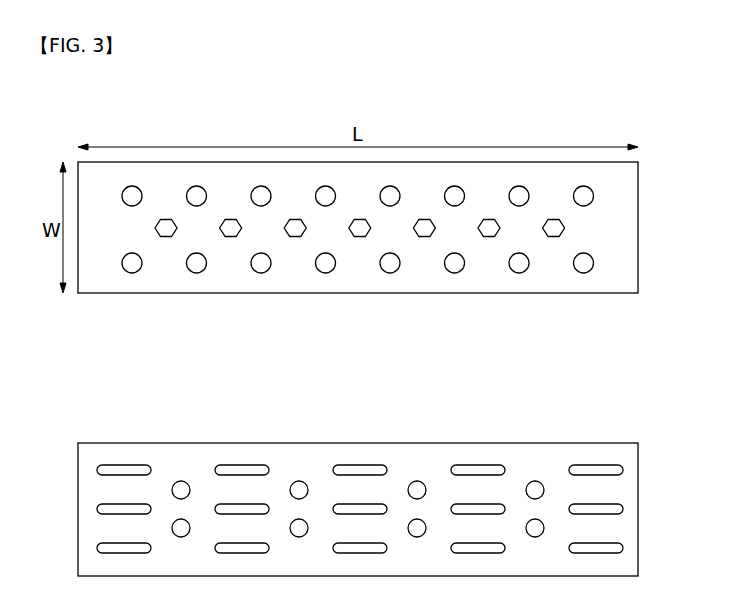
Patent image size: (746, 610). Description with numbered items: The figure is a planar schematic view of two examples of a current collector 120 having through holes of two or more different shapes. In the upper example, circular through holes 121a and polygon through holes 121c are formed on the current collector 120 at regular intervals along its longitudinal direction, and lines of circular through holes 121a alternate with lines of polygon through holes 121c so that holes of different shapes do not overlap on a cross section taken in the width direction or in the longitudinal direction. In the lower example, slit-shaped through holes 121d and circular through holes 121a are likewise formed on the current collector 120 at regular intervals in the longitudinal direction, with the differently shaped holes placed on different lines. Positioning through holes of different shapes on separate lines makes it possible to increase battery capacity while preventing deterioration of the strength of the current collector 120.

The current collector 120 is at (617, 267).
The circular through holes 121a is at (594, 194).
The polygon through holes 121c is at (565, 226).
The slit-shaped through holes 121d is at (623, 468).